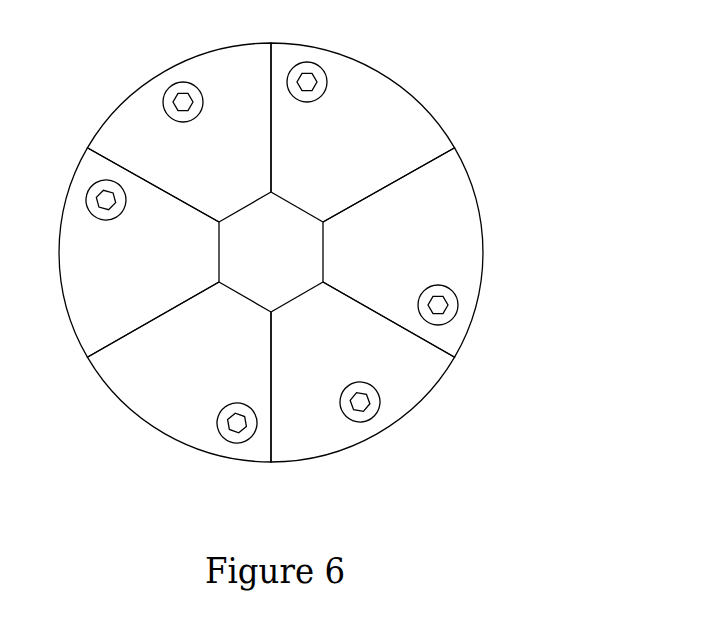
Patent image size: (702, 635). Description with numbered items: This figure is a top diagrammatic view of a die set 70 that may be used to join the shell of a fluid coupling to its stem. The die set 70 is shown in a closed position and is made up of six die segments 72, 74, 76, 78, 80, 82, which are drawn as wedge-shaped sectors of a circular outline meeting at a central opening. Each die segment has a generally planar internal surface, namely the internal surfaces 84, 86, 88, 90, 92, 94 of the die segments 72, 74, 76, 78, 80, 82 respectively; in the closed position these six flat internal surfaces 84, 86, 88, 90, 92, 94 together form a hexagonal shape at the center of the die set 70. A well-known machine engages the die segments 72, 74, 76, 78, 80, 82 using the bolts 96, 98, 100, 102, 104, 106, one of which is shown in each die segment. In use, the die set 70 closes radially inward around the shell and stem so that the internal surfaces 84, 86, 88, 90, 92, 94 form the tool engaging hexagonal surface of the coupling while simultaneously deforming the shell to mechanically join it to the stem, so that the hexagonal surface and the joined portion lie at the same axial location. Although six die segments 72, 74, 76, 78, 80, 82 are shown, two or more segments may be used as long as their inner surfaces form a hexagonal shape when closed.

The die set 70 is at (510, 53).
The die segment 72 is at (242, 52).
The die segment 74 is at (398, 103).
The die segment 76 is at (460, 228).
The die segment 78 is at (412, 385).
The die segment 80 is at (198, 442).
The die segment 82 is at (90, 314).
The internal surface 84 is at (250, 205).
The internal surface 86 is at (298, 203).
The internal surface 88 is at (327, 253).
The internal surface 90 is at (300, 296).
The internal surface 92 is at (243, 297).
The internal surface 94 is at (218, 256).
The bolt 96 is at (86, 200).
The bolt 98 is at (167, 92).
The bolt 100 is at (313, 66).
The bolt 102 is at (455, 312).
The bolt 104 is at (367, 417).
The bolt 106 is at (233, 437).